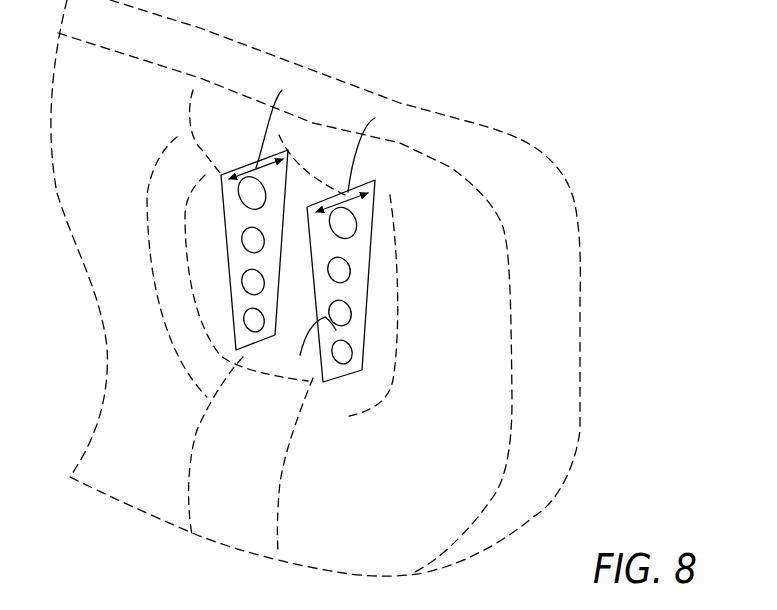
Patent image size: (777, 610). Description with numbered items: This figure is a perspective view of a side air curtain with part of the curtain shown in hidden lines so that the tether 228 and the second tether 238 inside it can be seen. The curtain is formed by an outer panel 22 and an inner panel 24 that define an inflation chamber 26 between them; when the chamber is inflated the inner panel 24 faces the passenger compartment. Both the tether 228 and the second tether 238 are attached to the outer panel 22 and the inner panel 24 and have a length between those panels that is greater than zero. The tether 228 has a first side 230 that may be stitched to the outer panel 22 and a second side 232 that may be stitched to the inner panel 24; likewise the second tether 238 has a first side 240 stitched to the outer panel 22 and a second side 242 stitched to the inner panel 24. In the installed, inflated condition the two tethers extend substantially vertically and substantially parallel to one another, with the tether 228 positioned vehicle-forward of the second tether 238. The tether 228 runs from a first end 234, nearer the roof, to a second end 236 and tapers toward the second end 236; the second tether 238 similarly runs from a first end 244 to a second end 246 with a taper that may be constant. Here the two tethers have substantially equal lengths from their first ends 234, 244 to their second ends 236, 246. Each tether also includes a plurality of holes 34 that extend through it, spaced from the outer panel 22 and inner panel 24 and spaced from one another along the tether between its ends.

The outer panel 22 is at (540, 233).
The inner panel 24 is at (453, 203).
The inflation chamber 26 is at (558, 305).
The hole 34 is at (254, 418).
The tether 228 is at (385, 319).
The first side 230 is at (345, 352).
The second side 232 is at (283, 408).
The first end 234 is at (331, 195).
The second end 236 is at (334, 385).
The second tether 238 is at (215, 234).
The first side 240 is at (279, 383).
The second side 242 is at (228, 257).
The first end 244 is at (242, 162).
The second end 246 is at (263, 354).